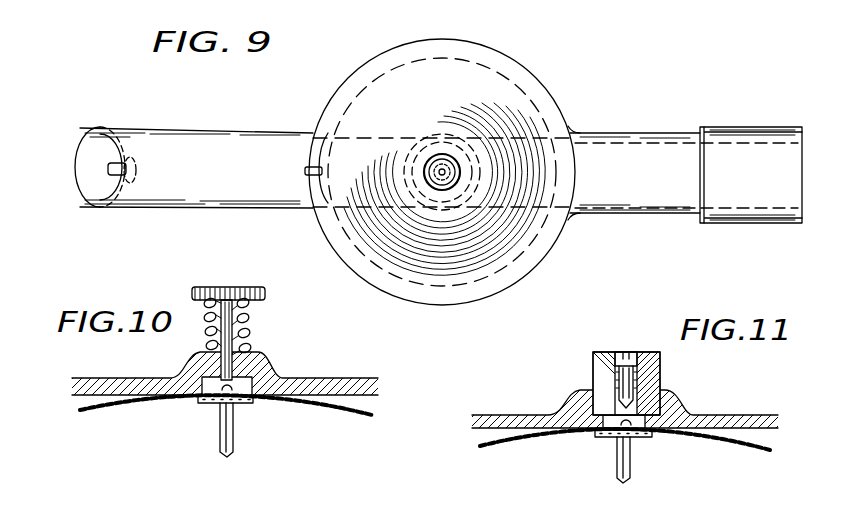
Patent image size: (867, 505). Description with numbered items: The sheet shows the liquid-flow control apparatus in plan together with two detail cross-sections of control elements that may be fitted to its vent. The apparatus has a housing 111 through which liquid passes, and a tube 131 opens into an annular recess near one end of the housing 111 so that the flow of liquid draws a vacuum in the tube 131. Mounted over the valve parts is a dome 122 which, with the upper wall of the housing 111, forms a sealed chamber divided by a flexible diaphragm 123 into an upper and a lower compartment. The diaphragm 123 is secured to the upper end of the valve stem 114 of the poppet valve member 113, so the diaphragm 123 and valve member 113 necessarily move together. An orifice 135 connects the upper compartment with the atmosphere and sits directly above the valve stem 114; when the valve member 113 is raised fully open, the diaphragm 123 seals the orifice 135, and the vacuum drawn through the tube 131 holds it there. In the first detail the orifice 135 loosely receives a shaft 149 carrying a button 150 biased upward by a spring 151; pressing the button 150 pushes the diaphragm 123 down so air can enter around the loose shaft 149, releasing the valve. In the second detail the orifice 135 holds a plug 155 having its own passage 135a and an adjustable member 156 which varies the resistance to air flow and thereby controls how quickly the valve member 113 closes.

In FIG. 9, the housing 111 is at (276, 104).
In FIG. 9, the valve member 113 is at (415, 198).
In FIG. 10, the valve stem 114 is at (234, 433).
In FIG. 11, the valve stem 114 is at (632, 463).
In FIG. 9, the dome 122 is at (458, 86).
In FIG. 10, the dome 122 is at (332, 384).
In FIG. 11, the dome 122 is at (508, 415).
In FIG. 10, the flexible diaphragm 123 is at (112, 403).
In FIG. 11, the flexible diaphragm 123 is at (513, 440).
In FIG. 9, the tube 131 is at (324, 165).
In FIG. 9, the orifice 135 is at (440, 164).
In FIG. 10, the orifice 135 is at (230, 366).
In FIG. 11, the orifice 135 is at (668, 407).
In FIG. 11, the orifice or passage 135a is at (661, 360).
In FIG. 10, the shaft 149 is at (251, 318).
In FIG. 10, the button 150 is at (266, 295).
In FIG. 10, the spring 151 is at (252, 334).
In FIG. 11, the plug 155 is at (600, 352).
In FIG. 11, the adjustable member 156 is at (621, 352).